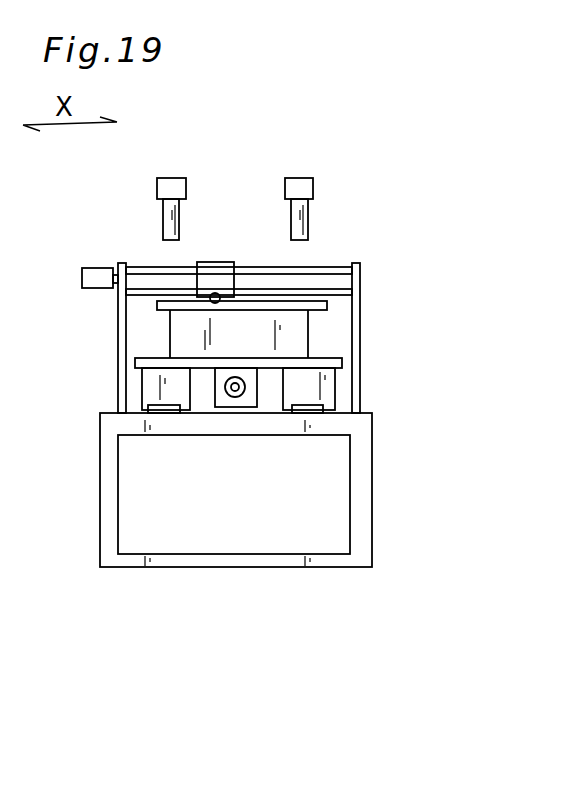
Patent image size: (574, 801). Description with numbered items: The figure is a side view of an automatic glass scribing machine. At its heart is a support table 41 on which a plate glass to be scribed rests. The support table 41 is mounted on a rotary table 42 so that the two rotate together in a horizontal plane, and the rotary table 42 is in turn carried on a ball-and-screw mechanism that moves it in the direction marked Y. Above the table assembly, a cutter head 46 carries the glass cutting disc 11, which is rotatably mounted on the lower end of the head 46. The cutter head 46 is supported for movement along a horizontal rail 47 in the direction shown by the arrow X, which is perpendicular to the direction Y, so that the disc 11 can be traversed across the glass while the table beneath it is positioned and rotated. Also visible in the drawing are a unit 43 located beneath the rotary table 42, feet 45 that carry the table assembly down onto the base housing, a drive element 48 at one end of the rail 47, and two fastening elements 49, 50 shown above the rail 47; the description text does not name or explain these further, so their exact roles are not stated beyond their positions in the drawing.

The glass cutting disc 11 is at (214, 296).
The support table 41 is at (158, 304).
The rotary table 42 is at (307, 328).
The drive unit 43 is at (247, 387).
The feet 45 is at (162, 414).
The cutter head 46 is at (233, 262).
The horizontal rail 47 is at (331, 298).
The motor 48 is at (82, 280).
The bolt 49 is at (172, 177).
The bolt 50 is at (302, 177).